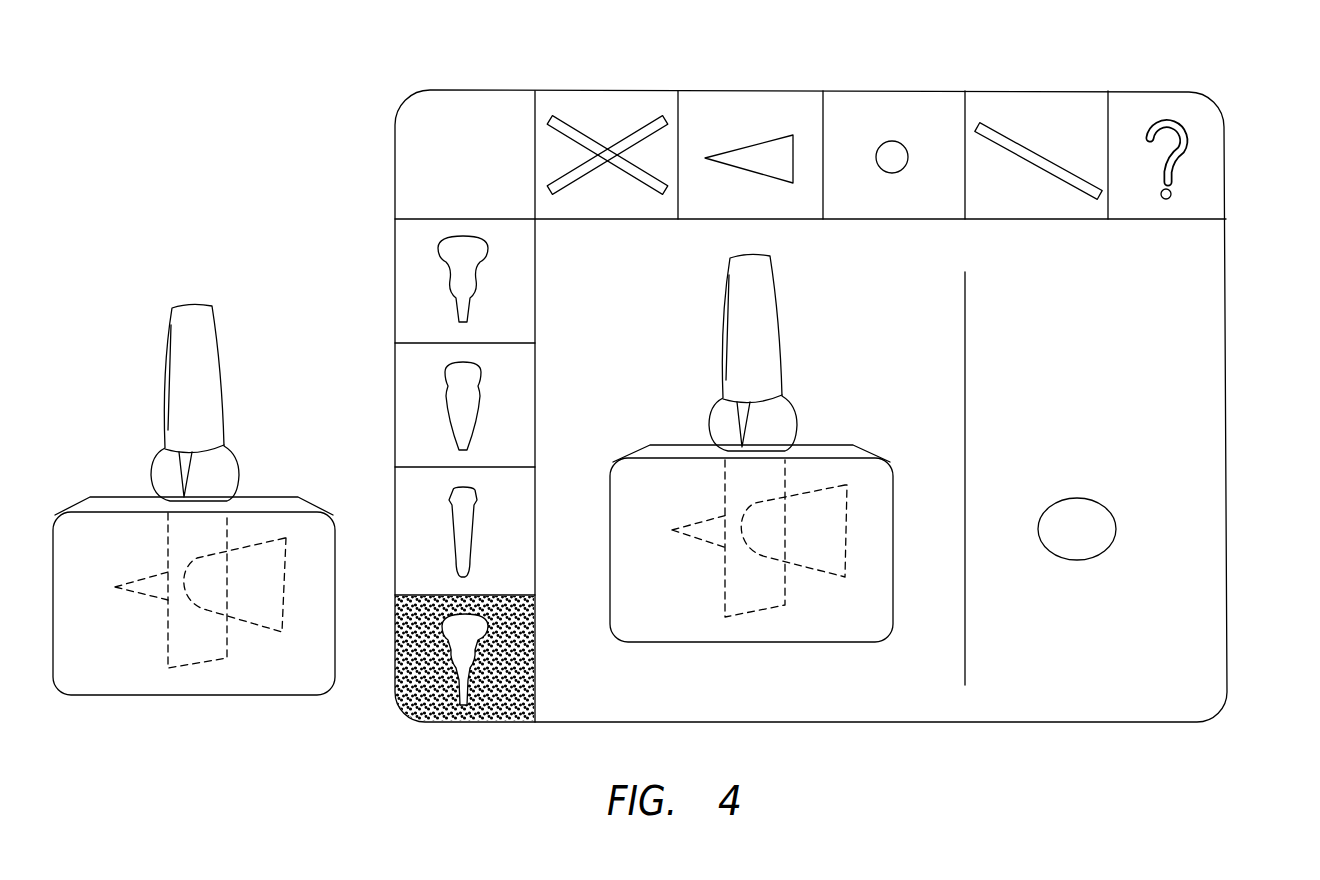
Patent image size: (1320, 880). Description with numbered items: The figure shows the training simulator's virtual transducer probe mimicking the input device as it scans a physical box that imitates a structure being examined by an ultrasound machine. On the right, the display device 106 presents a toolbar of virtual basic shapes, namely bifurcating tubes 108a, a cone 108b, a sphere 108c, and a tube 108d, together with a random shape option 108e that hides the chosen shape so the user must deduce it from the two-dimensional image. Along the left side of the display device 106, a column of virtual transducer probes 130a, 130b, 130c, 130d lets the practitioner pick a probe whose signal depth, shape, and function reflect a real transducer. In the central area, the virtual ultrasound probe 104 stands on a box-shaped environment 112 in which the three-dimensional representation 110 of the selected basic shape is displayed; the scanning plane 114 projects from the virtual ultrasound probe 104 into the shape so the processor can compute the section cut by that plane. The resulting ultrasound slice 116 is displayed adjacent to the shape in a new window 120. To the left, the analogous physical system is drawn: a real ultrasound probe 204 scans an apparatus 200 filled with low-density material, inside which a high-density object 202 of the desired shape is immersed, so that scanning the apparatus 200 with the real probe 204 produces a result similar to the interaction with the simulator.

The virtual ultrasound probe 104 is at (758, 284).
The display device 106 is at (1222, 113).
The bifurcating tubes 108a is at (600, 110).
The cone 108b is at (743, 112).
The sphere 108c is at (882, 113).
The tube 108d is at (1025, 112).
The random shape 108e is at (1167, 110).
The 3D representation of a virtual basic shape 110 is at (833, 573).
The environment 112 is at (653, 642).
The scanning plane 114 is at (787, 481).
The ultrasound slice 116 is at (1080, 497).
The new window 120 is at (1058, 670).
The virtual transducer probe 130a is at (423, 278).
The virtual transducer probe 130b is at (425, 402).
The virtual transducer probe 130c is at (425, 528).
The virtual transducer probe 130d is at (425, 648).
The apparatus 200 is at (128, 697).
The high-density object 202 is at (273, 630).
The real ultrasound probe 204 is at (202, 335).